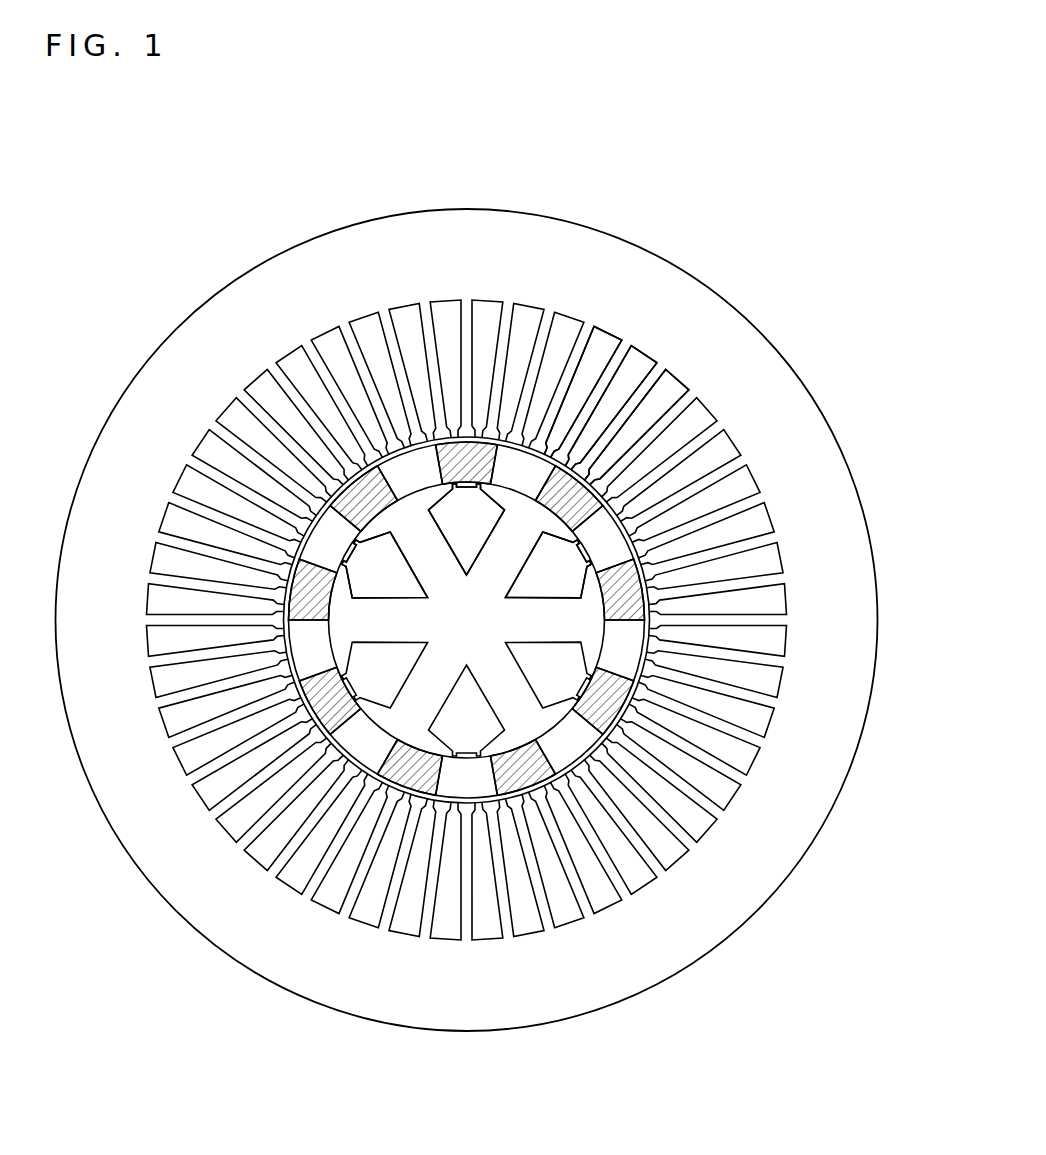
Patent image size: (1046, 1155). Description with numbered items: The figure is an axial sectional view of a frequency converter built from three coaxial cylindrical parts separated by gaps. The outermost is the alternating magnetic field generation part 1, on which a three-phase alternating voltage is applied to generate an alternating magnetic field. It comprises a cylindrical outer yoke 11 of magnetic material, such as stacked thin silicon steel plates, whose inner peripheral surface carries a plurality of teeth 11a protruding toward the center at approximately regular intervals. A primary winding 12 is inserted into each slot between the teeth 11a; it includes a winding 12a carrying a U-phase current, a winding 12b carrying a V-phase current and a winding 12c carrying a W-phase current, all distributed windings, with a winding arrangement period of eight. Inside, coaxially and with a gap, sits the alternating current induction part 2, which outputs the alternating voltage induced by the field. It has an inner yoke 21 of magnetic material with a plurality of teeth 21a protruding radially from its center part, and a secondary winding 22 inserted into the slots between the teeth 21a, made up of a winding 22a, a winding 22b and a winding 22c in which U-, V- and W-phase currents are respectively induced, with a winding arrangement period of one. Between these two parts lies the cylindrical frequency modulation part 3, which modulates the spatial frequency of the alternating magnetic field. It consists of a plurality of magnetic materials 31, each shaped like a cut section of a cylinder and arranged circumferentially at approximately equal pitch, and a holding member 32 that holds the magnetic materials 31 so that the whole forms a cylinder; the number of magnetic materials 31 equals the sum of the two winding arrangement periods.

The alternating magnetic field generation part 1 is at (548, 213).
The outer yoke 11 is at (183, 338).
The teeth 11a is at (188, 470).
The primary winding 12 is at (840, 178).
The winding 12a is at (598, 332).
The winding 12b is at (640, 356).
The winding 12c is at (670, 388).
The alternating current induction part 2 is at (527, 718).
The inner yoke 21 is at (477, 632).
The teeth 21a is at (546, 711).
The secondary winding 22 is at (505, 158).
The winding 22a is at (378, 548).
The winding 22b is at (443, 508).
The winding 22c is at (538, 532).
The frequency modulation part 3 is at (627, 650).
The magnetic materials 31 is at (613, 687).
The holding member 32 is at (452, 788).